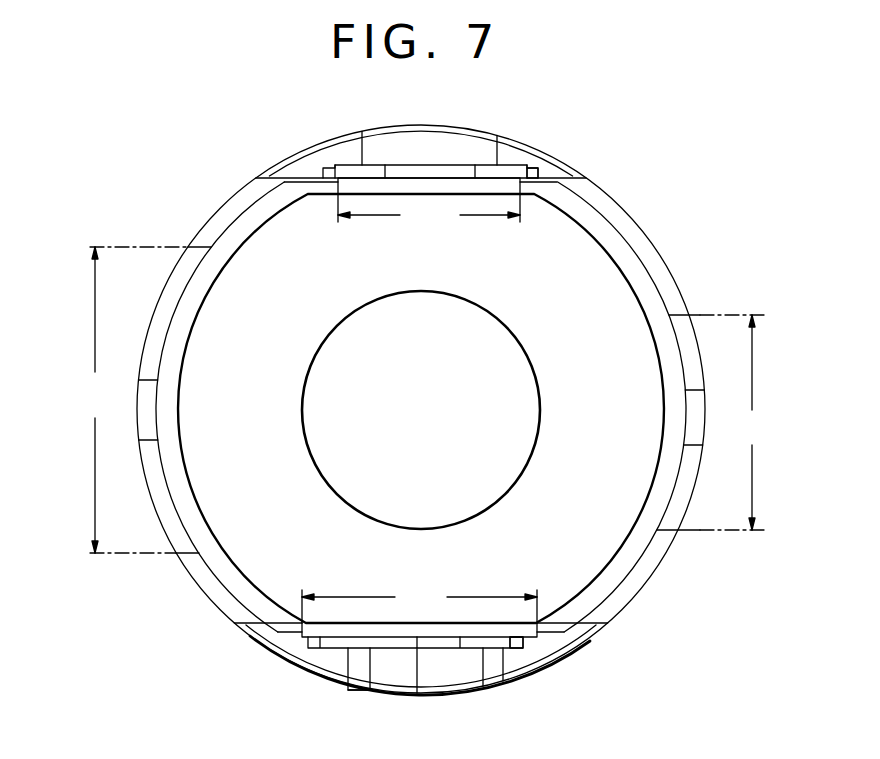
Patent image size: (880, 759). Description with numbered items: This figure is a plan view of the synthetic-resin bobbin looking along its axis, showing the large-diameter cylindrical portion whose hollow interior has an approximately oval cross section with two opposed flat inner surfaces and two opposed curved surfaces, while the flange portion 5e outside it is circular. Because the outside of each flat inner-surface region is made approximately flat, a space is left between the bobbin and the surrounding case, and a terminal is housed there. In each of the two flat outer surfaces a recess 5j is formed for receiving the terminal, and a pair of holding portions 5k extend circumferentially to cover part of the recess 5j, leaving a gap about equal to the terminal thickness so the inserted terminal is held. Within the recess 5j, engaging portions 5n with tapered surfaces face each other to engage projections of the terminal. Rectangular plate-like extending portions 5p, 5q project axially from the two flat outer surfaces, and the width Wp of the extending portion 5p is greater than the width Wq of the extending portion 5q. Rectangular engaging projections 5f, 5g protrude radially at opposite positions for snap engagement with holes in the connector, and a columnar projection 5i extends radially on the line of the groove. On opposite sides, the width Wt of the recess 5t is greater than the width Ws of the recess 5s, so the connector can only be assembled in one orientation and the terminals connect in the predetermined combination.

The flange portion 5e is at (452, 140).
The holding portion 5k is at (350, 152).
The recess 5j is at (528, 165).
The engaging portion 5n is at (545, 172).
The extending portion 5q is at (345, 188).
The extending portion 5p is at (262, 629).
The columnar projection 5i is at (358, 677).
The engaging projection 5g is at (147, 420).
The engaging projection 5f is at (697, 425).
The recess 5t is at (200, 552).
The recess 5s is at (660, 530).
The width of recess 5t Wt is at (86, 400).
The width of recess 5s Ws is at (750, 422).
The width of extending portion 5q Wq is at (429, 212).
The width of extending portion 5p Wp is at (419, 603).